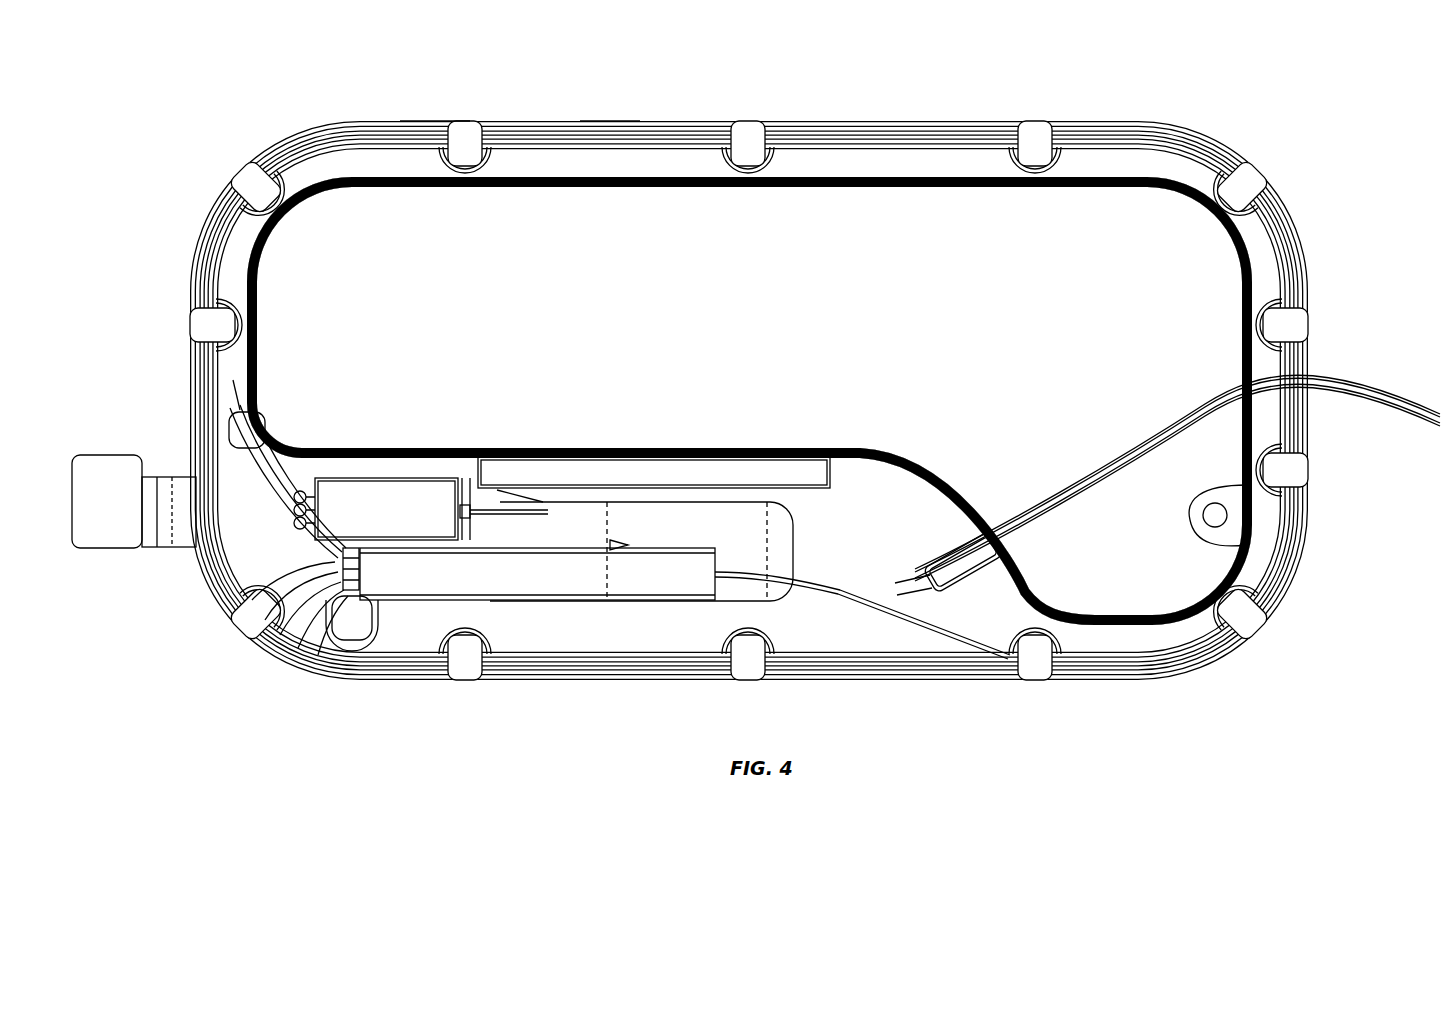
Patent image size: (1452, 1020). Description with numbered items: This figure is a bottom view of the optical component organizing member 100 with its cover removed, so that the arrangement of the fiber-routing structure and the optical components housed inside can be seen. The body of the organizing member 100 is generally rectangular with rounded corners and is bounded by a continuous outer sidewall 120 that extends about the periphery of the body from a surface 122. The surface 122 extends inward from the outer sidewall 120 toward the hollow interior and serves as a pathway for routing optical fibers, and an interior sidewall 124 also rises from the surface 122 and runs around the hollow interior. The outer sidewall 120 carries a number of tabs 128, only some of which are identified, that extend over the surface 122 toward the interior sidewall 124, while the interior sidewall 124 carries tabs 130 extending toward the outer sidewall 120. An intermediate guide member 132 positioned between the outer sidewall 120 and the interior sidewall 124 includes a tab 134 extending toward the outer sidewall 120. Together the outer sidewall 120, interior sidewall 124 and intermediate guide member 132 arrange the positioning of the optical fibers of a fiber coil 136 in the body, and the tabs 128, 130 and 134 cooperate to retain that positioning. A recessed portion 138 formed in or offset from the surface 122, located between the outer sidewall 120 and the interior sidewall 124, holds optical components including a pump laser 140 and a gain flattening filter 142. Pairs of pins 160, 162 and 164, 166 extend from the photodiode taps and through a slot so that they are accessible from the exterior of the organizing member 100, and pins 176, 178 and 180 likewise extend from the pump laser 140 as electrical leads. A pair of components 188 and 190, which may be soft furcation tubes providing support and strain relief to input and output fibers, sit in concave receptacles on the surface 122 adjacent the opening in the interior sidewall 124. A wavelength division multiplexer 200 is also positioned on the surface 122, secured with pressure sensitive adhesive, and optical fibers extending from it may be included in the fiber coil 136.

The optical component organizing member 100 is at (186, 128).
The outer sidewall 120 is at (430, 123).
The surface 122 is at (855, 530).
The interior sidewall 124 is at (745, 187).
The tabs 128 is at (750, 128).
The tabs 130 is at (197, 383).
The intermediate guide member 132 is at (262, 638).
The tab 134 is at (350, 622).
The fiber coil 136 is at (608, 122).
The recessed portion 138 is at (641, 530).
The pump laser 140 is at (412, 517).
The gain flattening filter 142 is at (580, 574).
The pin 160 is at (302, 655).
The pin 162 is at (283, 648).
The pin 164 is at (248, 620).
The pin 166 is at (232, 600).
The pin 176 is at (198, 404).
The pin 178 is at (198, 427).
The pin 180 is at (198, 449).
The component 188 is at (935, 578).
The component 190 is at (975, 556).
The wavelength division multiplexer 200 is at (690, 470).